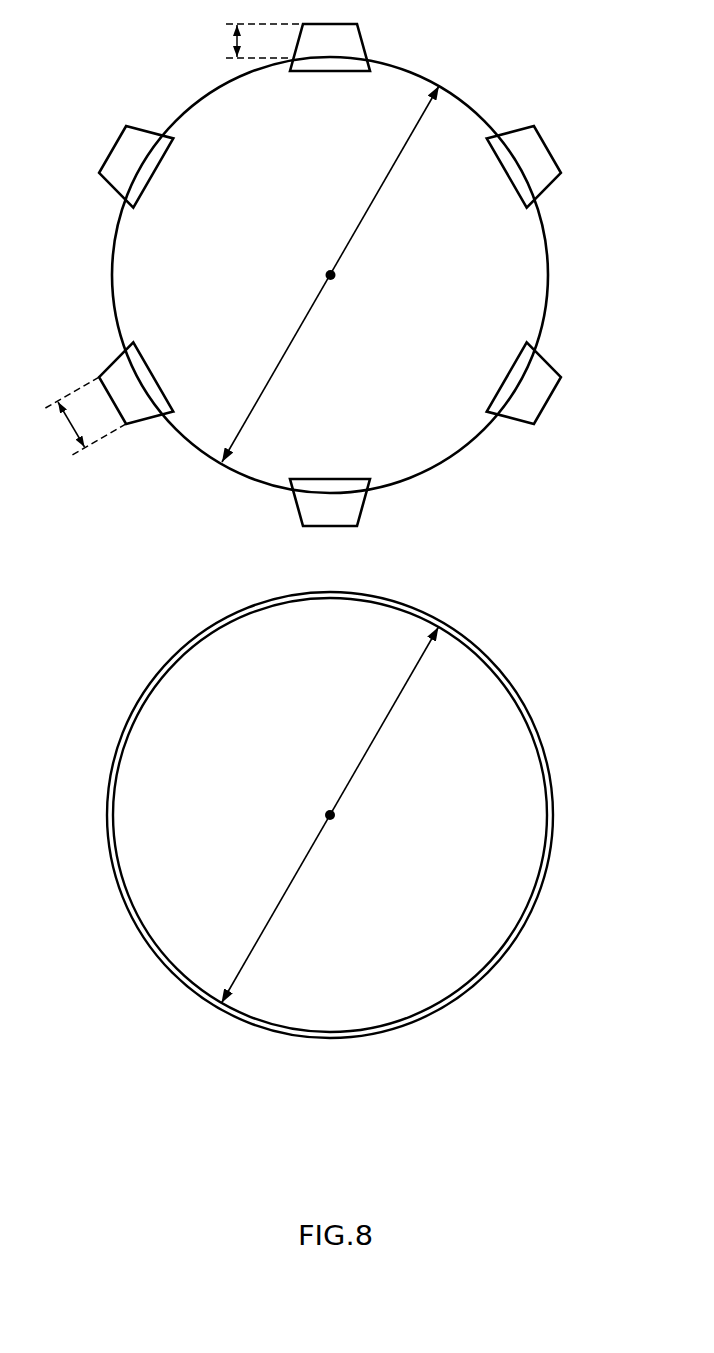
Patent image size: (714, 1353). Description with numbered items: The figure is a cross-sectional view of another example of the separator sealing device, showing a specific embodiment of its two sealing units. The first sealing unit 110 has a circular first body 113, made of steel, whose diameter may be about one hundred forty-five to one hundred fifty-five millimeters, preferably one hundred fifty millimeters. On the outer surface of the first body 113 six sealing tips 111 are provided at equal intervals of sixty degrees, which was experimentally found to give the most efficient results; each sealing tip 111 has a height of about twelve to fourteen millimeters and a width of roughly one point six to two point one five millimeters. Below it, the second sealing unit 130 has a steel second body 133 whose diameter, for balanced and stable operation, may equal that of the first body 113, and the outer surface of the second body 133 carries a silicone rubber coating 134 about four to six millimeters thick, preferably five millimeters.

The first sealing unit 110 is at (334, 275).
The sealing tip 111 is at (536, 156).
The first body 113 is at (538, 272).
The second sealing unit 130 is at (332, 815).
The second body 133 is at (536, 815).
The silicone rubber coating 134 is at (509, 675).